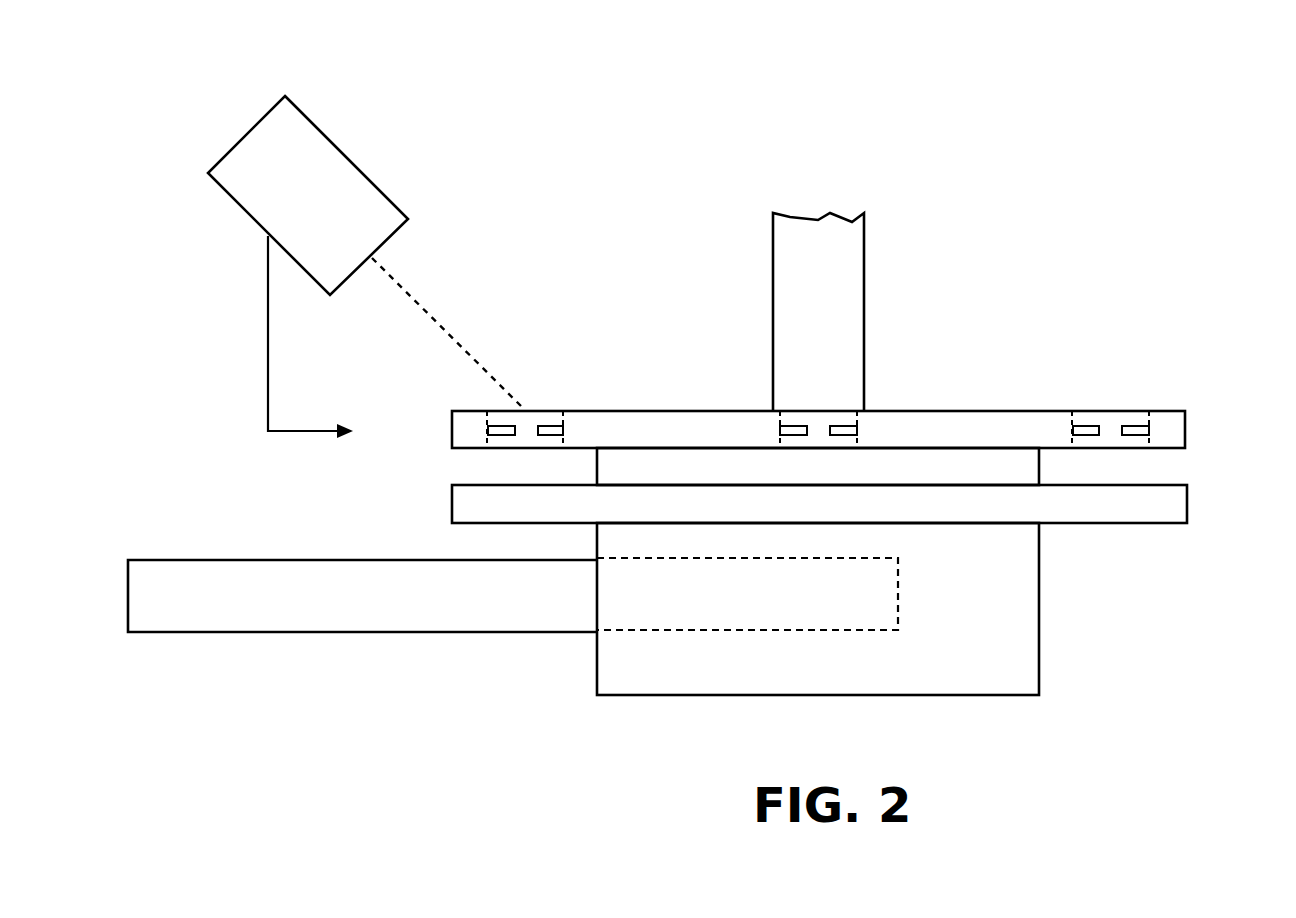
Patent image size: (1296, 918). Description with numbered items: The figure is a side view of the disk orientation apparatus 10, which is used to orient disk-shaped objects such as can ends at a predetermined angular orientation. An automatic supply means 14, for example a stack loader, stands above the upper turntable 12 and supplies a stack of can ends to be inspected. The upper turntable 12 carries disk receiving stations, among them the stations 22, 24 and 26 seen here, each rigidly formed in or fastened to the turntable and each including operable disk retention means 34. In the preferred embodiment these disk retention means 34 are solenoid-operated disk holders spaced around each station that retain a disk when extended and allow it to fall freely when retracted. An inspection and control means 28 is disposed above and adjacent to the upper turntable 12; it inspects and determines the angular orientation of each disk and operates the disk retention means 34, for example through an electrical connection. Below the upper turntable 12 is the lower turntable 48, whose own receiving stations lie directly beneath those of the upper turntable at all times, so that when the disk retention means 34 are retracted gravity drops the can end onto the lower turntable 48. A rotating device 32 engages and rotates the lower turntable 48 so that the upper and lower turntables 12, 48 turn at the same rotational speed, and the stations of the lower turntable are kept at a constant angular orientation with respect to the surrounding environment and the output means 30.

The disk orientation apparatus 10 is at (857, 243).
The upper turntable 12 is at (1175, 423).
The automatic supply means 14 is at (848, 268).
The disk receiving station 22 is at (535, 393).
The disk receiving station 24 is at (870, 421).
The disk receiving station 26 is at (1112, 390).
The inspection and control means 28 is at (330, 113).
The output means 30 is at (242, 621).
The rotating device 32 is at (1039, 460).
The operable disk retention means 34 is at (785, 431).
The lower turntable 48 is at (1180, 507).